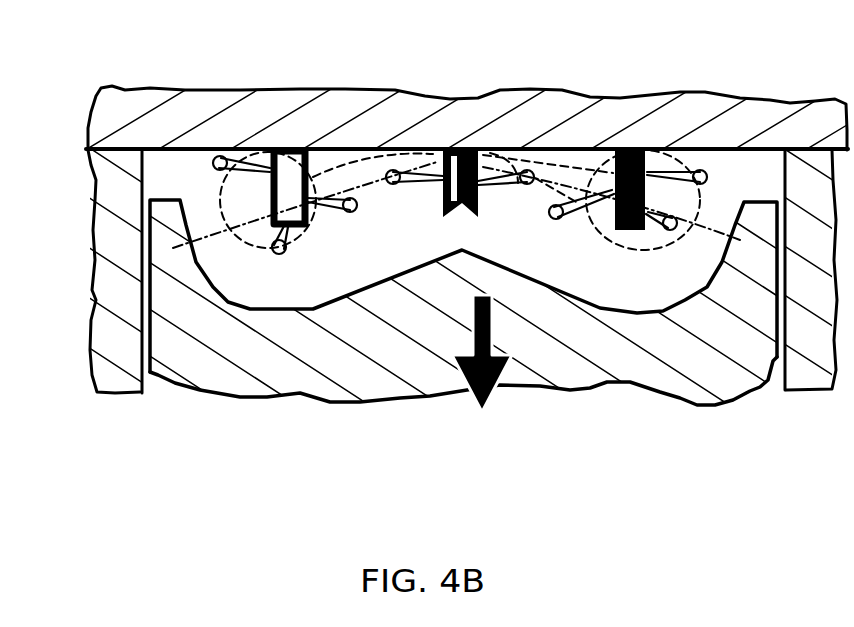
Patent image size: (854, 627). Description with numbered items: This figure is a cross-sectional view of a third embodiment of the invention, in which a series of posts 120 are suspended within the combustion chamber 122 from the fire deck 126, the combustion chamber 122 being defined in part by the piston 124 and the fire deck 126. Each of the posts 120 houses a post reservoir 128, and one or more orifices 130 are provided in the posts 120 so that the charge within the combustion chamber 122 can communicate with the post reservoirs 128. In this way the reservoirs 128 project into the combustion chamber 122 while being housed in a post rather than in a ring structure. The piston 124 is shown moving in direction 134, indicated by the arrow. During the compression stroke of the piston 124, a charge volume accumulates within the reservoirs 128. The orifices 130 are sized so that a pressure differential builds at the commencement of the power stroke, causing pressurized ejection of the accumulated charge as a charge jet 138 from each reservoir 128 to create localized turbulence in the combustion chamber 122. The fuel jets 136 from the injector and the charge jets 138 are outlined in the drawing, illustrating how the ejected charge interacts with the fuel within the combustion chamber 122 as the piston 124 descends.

The post 120 is at (478, 152).
The combustion chamber 122 is at (293, 283).
The piston 124 is at (155, 369).
The fire deck 126 is at (380, 143).
The post reservoir 128 is at (273, 147).
The orifice 130 is at (312, 227).
The direction 134 is at (501, 377).
The fuel jet 136 is at (632, 250).
The charge jet 138 is at (108, 292).